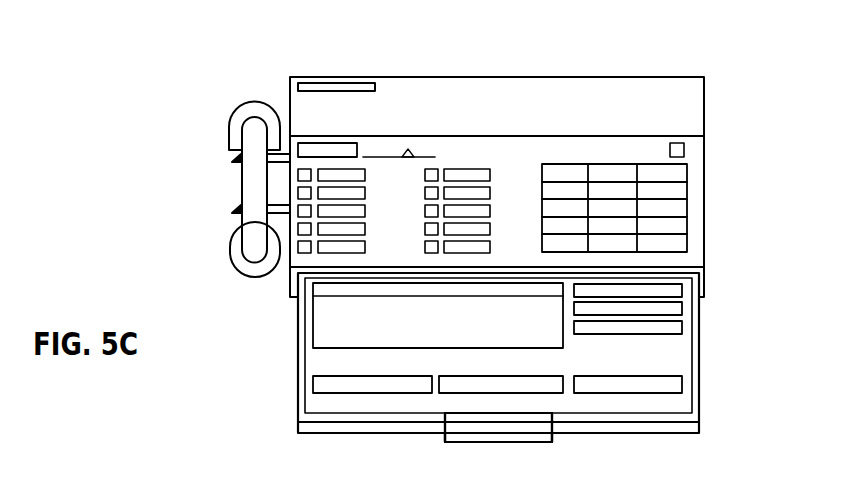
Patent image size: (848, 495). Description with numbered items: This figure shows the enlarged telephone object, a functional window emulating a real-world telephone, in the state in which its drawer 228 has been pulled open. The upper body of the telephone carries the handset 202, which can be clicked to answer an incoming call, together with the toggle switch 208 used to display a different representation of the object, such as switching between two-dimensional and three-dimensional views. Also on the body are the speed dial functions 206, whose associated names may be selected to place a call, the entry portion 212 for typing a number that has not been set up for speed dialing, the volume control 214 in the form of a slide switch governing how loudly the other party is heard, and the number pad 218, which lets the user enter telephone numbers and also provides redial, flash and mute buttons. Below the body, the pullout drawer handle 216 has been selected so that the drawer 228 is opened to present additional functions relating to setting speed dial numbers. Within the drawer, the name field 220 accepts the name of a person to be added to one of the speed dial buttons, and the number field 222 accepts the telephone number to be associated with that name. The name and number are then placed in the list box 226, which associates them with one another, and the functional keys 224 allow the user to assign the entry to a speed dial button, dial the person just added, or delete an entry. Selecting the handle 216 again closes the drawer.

The handset 202 is at (252, 100).
The speed dial functions 206 is at (430, 168).
The toggle switch 208 is at (318, 150).
The entry portion 212 is at (638, 102).
The volume control 214 is at (408, 149).
The pullout drawer handle 216 is at (507, 443).
The number pad 218 is at (687, 218).
The name field 220 is at (323, 386).
The number field 222 is at (545, 385).
The functional keys 224 is at (685, 320).
The list box 226 is at (357, 313).
The drawer 228 is at (318, 435).